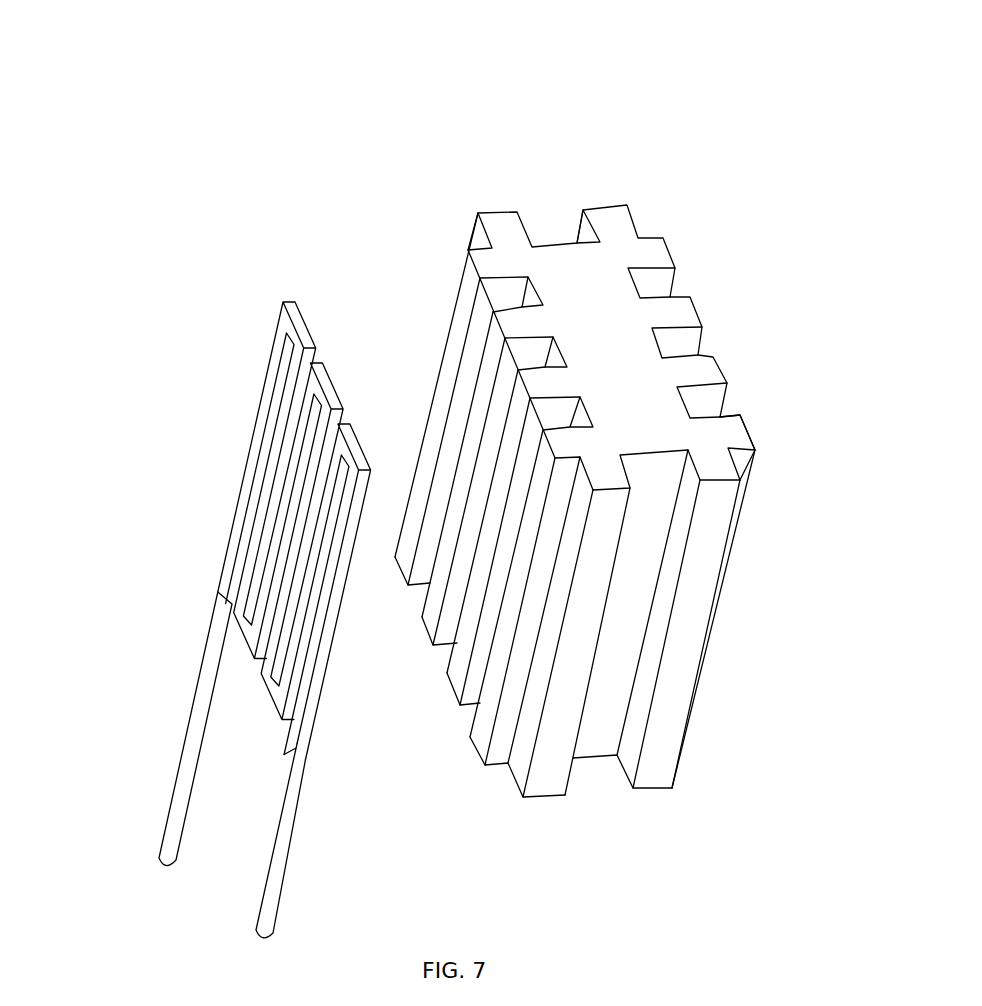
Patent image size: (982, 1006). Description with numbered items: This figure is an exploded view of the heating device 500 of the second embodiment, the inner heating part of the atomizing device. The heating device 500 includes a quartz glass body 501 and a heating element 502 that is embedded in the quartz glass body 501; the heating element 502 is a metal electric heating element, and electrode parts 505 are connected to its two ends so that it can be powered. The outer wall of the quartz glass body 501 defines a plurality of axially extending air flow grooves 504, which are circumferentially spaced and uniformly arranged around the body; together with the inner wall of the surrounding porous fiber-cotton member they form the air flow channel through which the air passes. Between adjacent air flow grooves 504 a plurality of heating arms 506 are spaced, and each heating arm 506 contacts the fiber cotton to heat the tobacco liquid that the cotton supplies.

The heating device 500 is at (542, 200).
The quartz glass body 501 is at (602, 272).
The heating element 502 is at (243, 435).
The air flow grooves 504 is at (683, 345).
The electrode parts 505 is at (297, 818).
The heating arms 506 is at (733, 432).